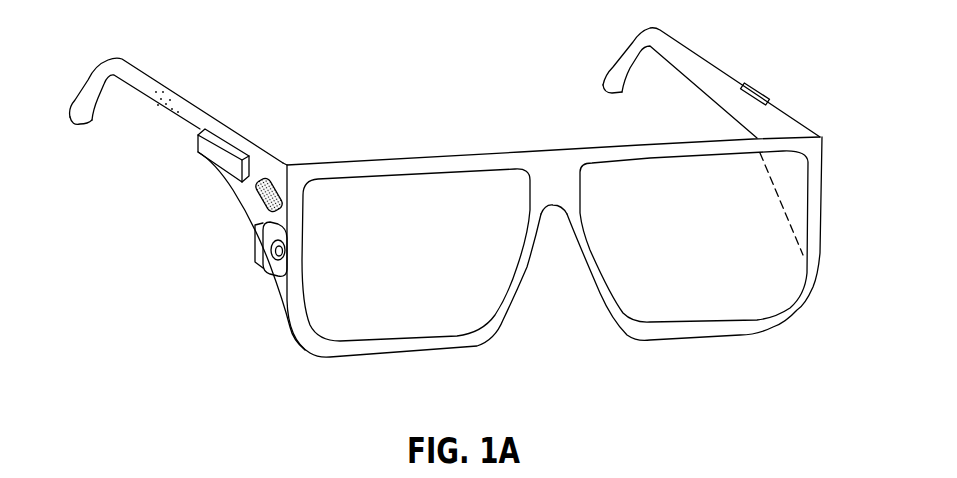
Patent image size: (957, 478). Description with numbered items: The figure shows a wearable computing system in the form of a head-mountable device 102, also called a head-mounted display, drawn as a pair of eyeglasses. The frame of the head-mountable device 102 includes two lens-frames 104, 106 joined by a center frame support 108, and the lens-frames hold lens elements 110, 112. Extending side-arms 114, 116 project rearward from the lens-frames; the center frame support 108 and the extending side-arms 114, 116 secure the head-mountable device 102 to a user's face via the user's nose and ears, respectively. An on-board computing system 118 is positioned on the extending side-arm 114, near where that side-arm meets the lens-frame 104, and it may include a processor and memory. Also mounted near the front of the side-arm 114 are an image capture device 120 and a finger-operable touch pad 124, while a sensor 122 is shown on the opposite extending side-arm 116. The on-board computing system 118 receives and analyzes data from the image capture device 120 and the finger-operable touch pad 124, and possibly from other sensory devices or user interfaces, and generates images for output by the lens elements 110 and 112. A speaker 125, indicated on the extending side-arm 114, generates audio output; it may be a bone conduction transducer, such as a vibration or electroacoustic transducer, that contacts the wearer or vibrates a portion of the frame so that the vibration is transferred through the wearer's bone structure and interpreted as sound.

The head-mountable device 102 is at (396, 66).
The lens-frame 104 is at (380, 168).
The lens-frame 106 is at (633, 152).
The center frame support 108 is at (555, 175).
The lens element 110 is at (358, 318).
The lens element 112 is at (712, 303).
The extending side-arm 114 is at (222, 133).
The extending side-arm 116 is at (717, 70).
The on-board computing system 118 is at (217, 152).
The image capture device 120 is at (258, 238).
The sensor 122 is at (760, 92).
The finger-operable touch pad 124 is at (255, 197).
The speaker 125 is at (167, 98).